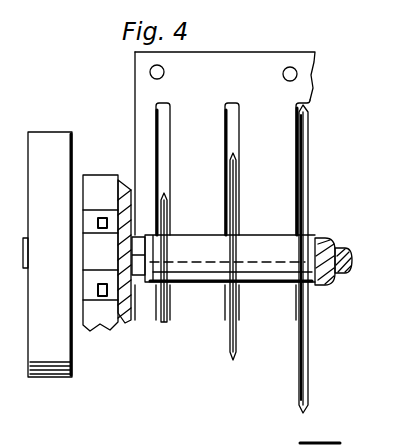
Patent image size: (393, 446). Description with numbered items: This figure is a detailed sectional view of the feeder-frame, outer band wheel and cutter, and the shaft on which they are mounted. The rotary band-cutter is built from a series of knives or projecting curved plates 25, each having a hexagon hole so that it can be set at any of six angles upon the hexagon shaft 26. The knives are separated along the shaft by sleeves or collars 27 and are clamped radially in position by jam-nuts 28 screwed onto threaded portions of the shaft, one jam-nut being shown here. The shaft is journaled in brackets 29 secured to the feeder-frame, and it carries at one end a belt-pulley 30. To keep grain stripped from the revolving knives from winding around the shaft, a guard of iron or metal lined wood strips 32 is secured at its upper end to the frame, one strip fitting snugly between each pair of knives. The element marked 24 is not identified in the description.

The guard strips 32 is at (136, 151).
The belt-pulley 30 is at (47, 254).
The brackets 29 is at (100, 253).
The jam-nuts 28 is at (130, 323).
The sleeves or collars 27 is at (200, 284).
The knives 25 is at (164, 326).
The hexagon shaft 26 is at (337, 262).
The rod end 24 is at (382, 282).